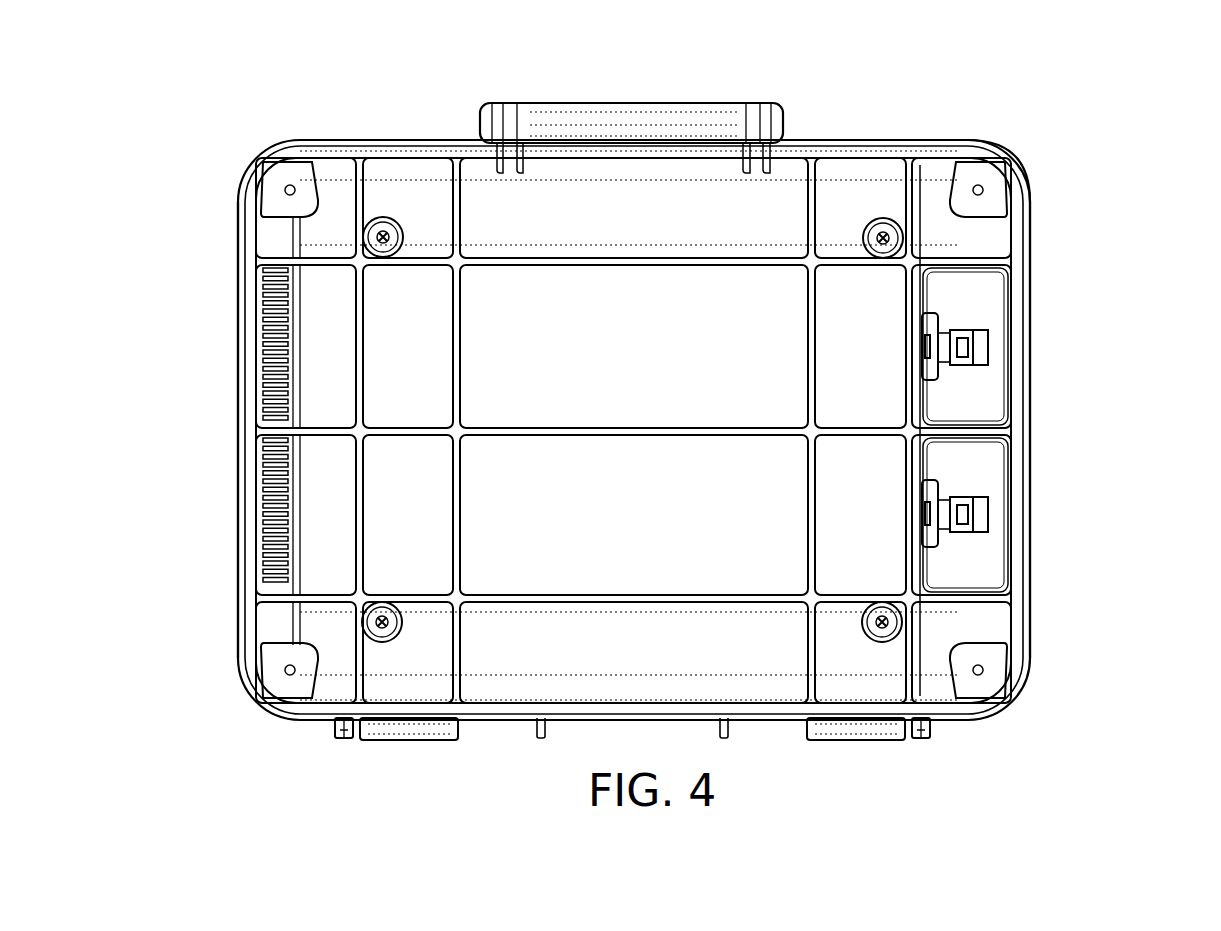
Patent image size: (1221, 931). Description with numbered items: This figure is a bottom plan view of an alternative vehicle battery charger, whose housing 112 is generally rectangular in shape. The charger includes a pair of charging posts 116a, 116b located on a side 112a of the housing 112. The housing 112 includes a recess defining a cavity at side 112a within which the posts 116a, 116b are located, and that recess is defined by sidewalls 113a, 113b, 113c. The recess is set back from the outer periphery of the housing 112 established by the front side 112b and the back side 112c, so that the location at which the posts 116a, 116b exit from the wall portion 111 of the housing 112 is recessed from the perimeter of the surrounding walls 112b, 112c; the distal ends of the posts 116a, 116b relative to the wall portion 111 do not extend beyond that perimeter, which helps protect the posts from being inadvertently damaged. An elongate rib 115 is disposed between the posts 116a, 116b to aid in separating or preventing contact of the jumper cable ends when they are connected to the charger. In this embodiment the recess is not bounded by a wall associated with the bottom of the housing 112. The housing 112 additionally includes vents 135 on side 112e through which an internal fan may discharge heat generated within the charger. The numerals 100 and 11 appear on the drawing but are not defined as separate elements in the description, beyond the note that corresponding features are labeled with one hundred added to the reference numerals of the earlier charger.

The carrying case assembly 100 is at (298, 48).
The case body 11 is at (990, 542).
The wall portion 111 is at (925, 292).
The housing 112 is at (1015, 158).
The side of housing 112a is at (1013, 620).
The front side 112b is at (857, 157).
The back side 112c is at (490, 715).
The side of housing with vents 112e is at (240, 241).
The sidewall 113a is at (990, 272).
The sidewall 113b is at (990, 385).
The sidewall 113c is at (970, 596).
The elongate rib 115 is at (1000, 470).
The charging post 116a is at (990, 345).
The charging post 116b is at (990, 512).
The vents 135 is at (262, 386).